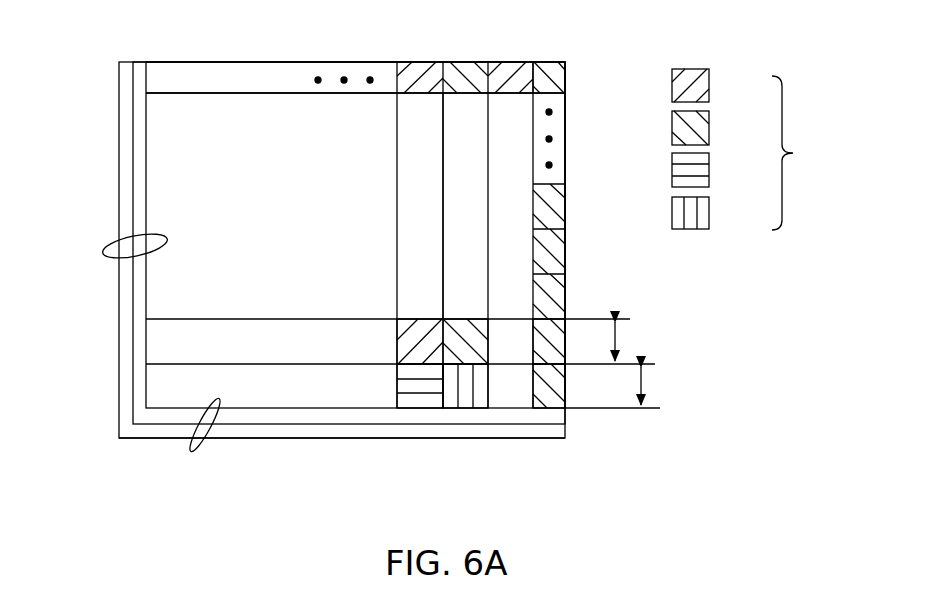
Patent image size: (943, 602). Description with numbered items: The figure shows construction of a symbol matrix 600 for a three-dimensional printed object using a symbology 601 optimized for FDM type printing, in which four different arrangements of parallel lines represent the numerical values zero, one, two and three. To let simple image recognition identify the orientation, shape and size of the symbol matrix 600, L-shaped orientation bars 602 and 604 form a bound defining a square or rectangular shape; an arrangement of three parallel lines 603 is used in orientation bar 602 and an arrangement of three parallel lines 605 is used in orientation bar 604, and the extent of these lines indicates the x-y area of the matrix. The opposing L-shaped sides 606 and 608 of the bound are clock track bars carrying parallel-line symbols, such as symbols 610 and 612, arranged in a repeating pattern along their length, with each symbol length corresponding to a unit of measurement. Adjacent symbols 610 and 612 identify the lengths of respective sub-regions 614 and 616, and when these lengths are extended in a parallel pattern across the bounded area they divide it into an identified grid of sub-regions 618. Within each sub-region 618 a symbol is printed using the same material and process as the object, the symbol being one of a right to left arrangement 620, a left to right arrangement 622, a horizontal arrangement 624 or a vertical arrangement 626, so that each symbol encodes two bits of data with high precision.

The symbol matrix 600 is at (717, 23).
The symbology 601 is at (756, 149).
The orientation bar 602 is at (116, 188).
The arrangement of three parallel lines 603 is at (103, 250).
The orientation bar 604 is at (292, 443).
The arrangement of three parallel lines 605 is at (190, 450).
The clock track bar side 606 is at (569, 218).
The clock track bar side 608 is at (275, 58).
The symbol 610 is at (560, 397).
The symbol 612 is at (545, 340).
The sub-region 614 is at (641, 386).
The sub-region 616 is at (615, 343).
The grid of sub-regions 618 is at (394, 329).
The right to left arrangement 620 is at (400, 338).
The left to right arrangement 622 is at (466, 338).
The horizontal arrangement 624 is at (413, 385).
The vertical arrangement 626 is at (460, 395).